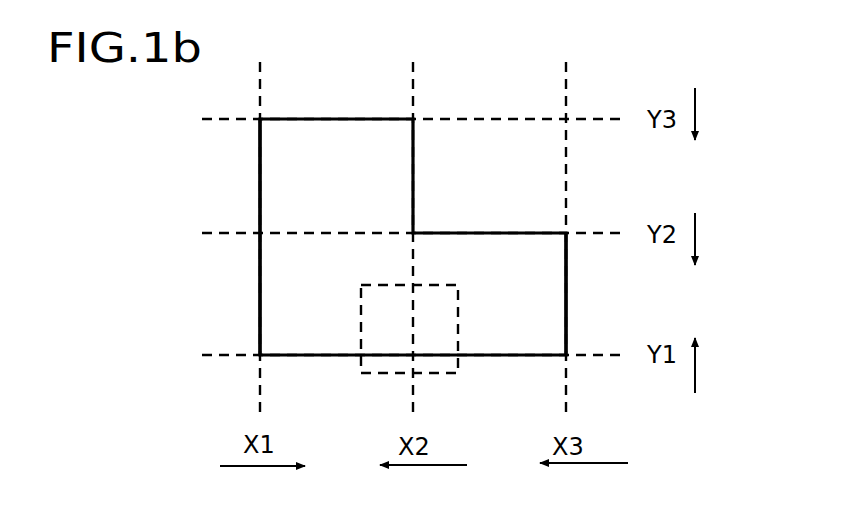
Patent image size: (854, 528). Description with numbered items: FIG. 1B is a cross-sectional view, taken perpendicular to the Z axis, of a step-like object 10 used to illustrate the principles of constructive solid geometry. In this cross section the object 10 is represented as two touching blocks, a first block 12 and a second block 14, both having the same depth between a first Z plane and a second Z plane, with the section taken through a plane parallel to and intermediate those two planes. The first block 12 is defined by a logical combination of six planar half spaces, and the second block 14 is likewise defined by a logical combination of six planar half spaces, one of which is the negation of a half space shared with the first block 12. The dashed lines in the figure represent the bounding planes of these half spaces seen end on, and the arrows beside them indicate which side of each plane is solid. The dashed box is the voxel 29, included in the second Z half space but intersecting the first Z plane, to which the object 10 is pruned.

The step-like object 10 is at (425, 217).
The first block 12 is at (260, 268).
The second block 14 is at (566, 268).
The voxel 29 is at (438, 373).